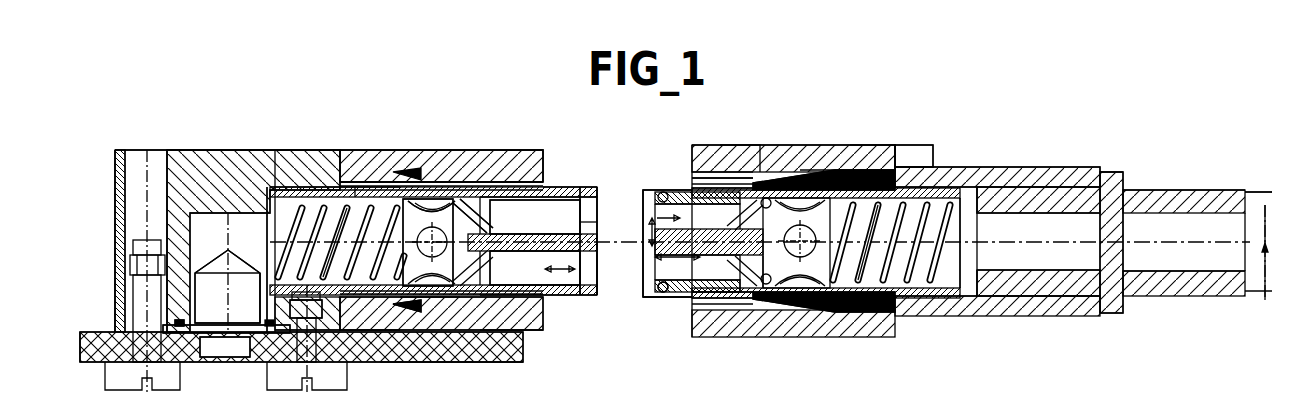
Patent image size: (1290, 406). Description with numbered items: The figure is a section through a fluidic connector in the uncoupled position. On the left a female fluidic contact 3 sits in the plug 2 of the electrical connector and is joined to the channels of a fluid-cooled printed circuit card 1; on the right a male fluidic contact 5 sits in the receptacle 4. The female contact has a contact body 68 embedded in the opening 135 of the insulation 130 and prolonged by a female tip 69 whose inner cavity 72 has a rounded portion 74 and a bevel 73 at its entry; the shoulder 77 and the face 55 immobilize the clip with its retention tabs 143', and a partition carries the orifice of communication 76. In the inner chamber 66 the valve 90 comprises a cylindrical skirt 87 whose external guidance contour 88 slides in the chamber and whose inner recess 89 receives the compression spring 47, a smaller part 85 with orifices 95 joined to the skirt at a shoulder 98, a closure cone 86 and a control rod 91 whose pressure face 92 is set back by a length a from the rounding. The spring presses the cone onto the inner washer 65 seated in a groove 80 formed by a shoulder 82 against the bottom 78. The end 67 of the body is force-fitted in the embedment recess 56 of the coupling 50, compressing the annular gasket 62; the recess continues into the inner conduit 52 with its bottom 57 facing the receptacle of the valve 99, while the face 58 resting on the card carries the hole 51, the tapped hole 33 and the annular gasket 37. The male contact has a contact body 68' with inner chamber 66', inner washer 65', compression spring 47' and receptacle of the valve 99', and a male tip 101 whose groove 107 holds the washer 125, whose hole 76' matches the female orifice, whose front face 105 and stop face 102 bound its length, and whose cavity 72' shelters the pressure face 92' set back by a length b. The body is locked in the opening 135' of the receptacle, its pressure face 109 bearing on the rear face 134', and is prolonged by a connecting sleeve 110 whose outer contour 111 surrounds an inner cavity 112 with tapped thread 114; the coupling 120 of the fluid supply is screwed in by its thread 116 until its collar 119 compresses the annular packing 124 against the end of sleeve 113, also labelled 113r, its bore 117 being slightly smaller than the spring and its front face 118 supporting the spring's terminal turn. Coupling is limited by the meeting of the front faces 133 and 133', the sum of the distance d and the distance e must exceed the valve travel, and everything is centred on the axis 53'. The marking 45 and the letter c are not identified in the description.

The printed circuit card 1 is at (93, 370).
The plug 2 is at (455, 150).
The female fluidic contact 3 is at (578, 182).
The receptacle 4 is at (770, 146).
The male fluidic contact 5 is at (959, 166).
The tapped hole 33 is at (118, 312).
The annular gasket 37 is at (180, 340).
The recess 45 is at (226, 362).
The coiled compression spring 47 is at (357, 192).
The coupling 50 is at (196, 152).
The hole 51 is at (205, 336).
The inner conduit 52 is at (228, 213).
The face 55 is at (345, 150).
The embedment recess 56 is at (309, 170).
The bottom 57 is at (270, 188).
The face 58 is at (292, 312).
The annular gasket 62 is at (289, 165).
The inner washer 65 is at (441, 343).
The inner chamber 66 is at (415, 344).
The end of contact body 67 is at (258, 290).
The contact body 68 is at (335, 151).
The female tip 69 is at (575, 298).
The inner cavity 72 is at (535, 217).
The bevel 73 is at (598, 297).
The rounded portion 74 is at (598, 200).
The orifice of communication 76 is at (535, 268).
The shoulder 77 is at (510, 362).
The bottom 78 is at (523, 334).
The groove 80 is at (487, 332).
The shoulder 82 is at (470, 200).
The part 85 is at (443, 332).
The closure cone 86 is at (545, 184).
The cylindrical skirt 87 is at (358, 187).
The external guidance contour 88 is at (355, 332).
The inner recess 89 is at (383, 332).
The valve 90 is at (415, 200).
The control rod 91 is at (545, 296).
The pressure face 92 is at (598, 241).
The orifices 95 is at (483, 215).
The shoulder 98 is at (435, 200).
The receptacle of the valve 99 is at (227, 286).
The end of sleeve 113 is at (405, 362).
The insulation 130 is at (517, 150).
The front face 133 is at (570, 155).
The opening 135 is at (514, 150).
The length a is at (586, 212).
The distance d is at (560, 262).
The length b is at (649, 232).
The distance c is at (668, 221).
The distance e is at (681, 257).
The front face 133' is at (697, 150).
The cavity 72' is at (718, 140).
The opening 135' is at (726, 145).
The inner washer 65' is at (740, 144).
The inner chamber 66' is at (824, 150).
The contact body 68' is at (847, 139).
The rear face 134' is at (877, 133).
The pressure face 109 is at (912, 150).
The inner cavity 112 is at (985, 187).
The end of sleeve 113r is at (1098, 172).
The thread 116 is at (1118, 190).
The coupling 120 is at (1180, 190).
The bore 117 is at (1255, 192).
The front face 105 is at (640, 195).
The pressure face 92' is at (626, 243).
The washer 125 is at (660, 290).
The male tip 101 is at (672, 298).
The groove 107 is at (660, 300).
The stop face 102 is at (745, 300).
The hole 76' is at (776, 313).
The retention tabs 143' is at (824, 331).
The compression spring 47' is at (870, 287).
The receptacle of the valve 99' is at (936, 331).
The connecting sleeve 110 is at (940, 300).
The front face 118 is at (982, 296).
The outer contour 111 is at (1020, 316).
The tapped thread 114 is at (1060, 296).
The annular packing 124 is at (1105, 316).
The collar 119 is at (1130, 300).
The axis 53' is at (1263, 265).